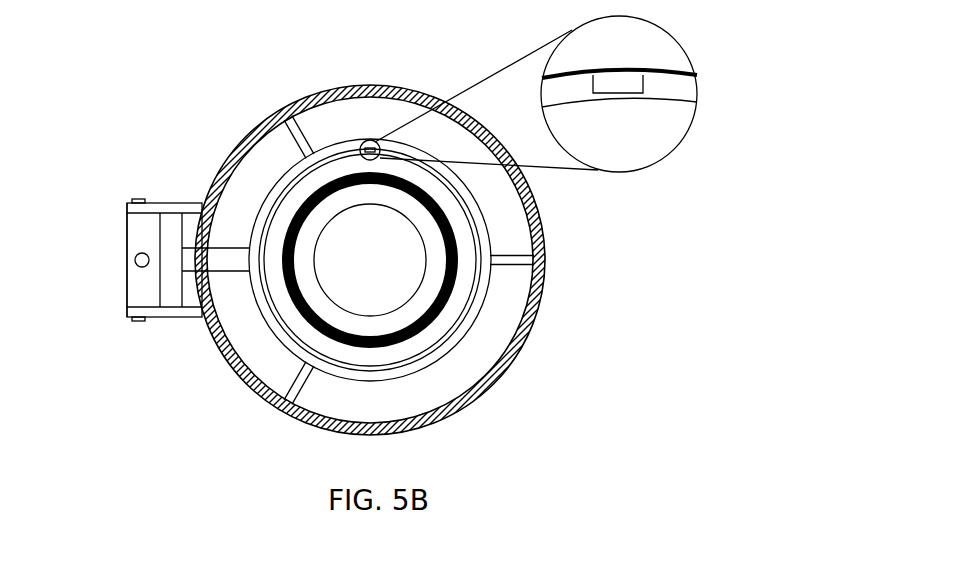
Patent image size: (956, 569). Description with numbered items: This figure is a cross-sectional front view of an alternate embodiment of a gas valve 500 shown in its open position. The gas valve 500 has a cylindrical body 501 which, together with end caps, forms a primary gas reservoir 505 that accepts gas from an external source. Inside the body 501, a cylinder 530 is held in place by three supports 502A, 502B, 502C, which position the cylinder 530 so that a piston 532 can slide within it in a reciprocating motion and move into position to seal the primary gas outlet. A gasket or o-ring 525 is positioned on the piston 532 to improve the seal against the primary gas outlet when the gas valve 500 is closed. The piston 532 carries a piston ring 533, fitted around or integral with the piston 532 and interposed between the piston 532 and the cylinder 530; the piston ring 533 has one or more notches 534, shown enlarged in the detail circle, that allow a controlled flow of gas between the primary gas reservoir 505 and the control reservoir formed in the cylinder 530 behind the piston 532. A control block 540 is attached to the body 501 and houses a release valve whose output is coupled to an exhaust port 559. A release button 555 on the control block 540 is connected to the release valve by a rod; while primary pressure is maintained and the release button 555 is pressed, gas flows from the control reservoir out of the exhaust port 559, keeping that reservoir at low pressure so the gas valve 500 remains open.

The gas valve 500 is at (597, 395).
The cylindrical body 501 is at (512, 362).
The support 502A is at (513, 265).
The support 502B is at (293, 137).
The support 502C is at (300, 392).
The primary gas reservoir 505 is at (505, 323).
The gasket or o-ring 525 is at (347, 177).
The cylinder 530 is at (422, 368).
The piston 532 is at (300, 322).
The piston ring 533 is at (580, 95).
The notch 534 is at (632, 90).
The control block 540 is at (150, 222).
The release button 555 is at (127, 278).
The exhaust port 559 is at (146, 284).